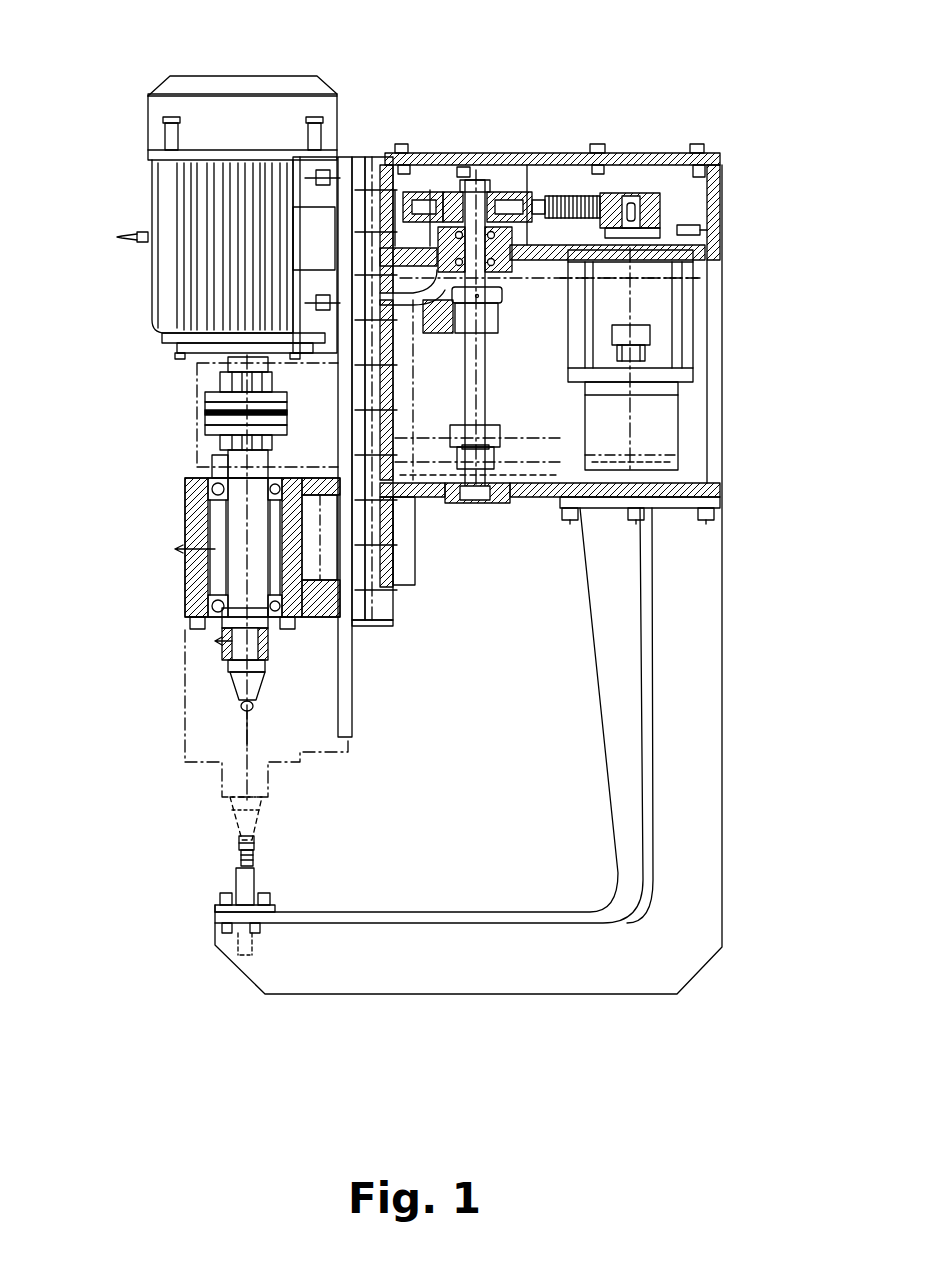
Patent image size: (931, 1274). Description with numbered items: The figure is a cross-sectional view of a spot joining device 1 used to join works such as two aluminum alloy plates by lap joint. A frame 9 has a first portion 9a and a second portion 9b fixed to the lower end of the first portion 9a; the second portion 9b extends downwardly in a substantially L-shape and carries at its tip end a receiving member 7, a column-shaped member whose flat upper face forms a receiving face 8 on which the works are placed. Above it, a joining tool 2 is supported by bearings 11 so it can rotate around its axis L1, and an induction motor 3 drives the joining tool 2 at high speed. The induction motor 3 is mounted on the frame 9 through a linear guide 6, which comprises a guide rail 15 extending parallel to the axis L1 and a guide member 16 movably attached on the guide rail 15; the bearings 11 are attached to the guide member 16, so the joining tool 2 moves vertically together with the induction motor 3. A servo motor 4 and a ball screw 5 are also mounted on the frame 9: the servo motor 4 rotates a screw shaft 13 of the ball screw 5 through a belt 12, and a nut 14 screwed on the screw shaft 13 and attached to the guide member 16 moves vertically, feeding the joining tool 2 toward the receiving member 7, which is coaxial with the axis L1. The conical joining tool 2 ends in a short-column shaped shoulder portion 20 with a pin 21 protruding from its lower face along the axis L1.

The spot joining device 1 is at (80, 78).
The joining tool 2 is at (228, 665).
The induction motor 3 is at (148, 207).
The servo motor 4 is at (642, 282).
The ball screw 5 is at (512, 440).
The linear guide 6 is at (379, 592).
The receiving member 7 is at (245, 853).
The receiving face 8 is at (250, 840).
The frame 9 is at (750, 470).
The first portion 9a is at (707, 292).
The second portion 9b is at (707, 548).
The bearings 11 is at (185, 598).
The belt 12 is at (568, 200).
The screw shaft 13 is at (490, 392).
The nut 14 is at (485, 320).
The guide rail 15 is at (430, 460).
The guide member 16 is at (350, 398).
The shoulder portion 20 is at (243, 710).
The pin 21 is at (253, 711).
The axis L1 is at (245, 730).